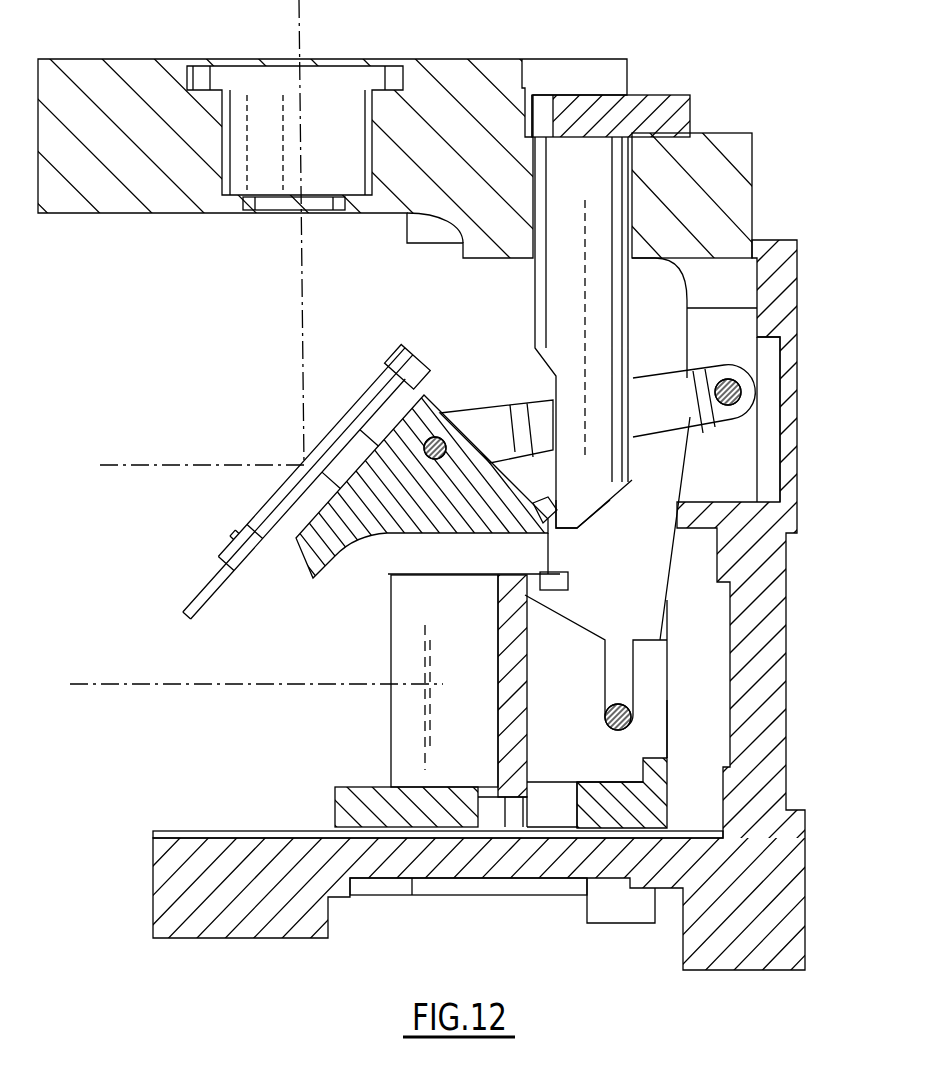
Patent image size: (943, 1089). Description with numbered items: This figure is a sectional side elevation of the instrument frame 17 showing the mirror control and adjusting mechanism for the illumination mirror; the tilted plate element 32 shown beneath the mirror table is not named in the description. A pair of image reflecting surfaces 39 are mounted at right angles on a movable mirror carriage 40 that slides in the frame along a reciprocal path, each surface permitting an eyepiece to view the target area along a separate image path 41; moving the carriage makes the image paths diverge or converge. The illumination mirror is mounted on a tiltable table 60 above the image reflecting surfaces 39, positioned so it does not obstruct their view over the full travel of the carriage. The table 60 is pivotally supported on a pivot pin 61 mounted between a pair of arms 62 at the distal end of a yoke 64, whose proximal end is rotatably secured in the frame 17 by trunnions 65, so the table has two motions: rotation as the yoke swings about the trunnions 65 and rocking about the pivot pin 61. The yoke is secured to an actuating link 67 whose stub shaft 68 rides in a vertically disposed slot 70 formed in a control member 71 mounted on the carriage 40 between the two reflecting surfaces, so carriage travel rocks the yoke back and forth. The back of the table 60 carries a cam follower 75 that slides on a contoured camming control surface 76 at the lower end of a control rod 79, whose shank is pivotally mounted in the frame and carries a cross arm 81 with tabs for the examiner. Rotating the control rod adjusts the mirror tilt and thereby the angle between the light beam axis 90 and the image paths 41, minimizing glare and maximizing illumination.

The frame 17 is at (797, 657).
The plate 32 is at (262, 505).
The image reflecting surface 39 is at (405, 726).
The mirror carriage 40 is at (335, 808).
The image path 41 is at (155, 686).
The tiltable table 60 is at (308, 565).
The pivot pin 61 is at (443, 440).
The arms 62 is at (497, 437).
The yoke 64 is at (666, 373).
The trunnions 65 is at (735, 392).
The actuating link 67 is at (677, 478).
The stub shaft 68 is at (617, 737).
The slot 70 is at (633, 672).
The control member 71 is at (657, 732).
The cam follower 75 is at (553, 517).
The camming control surface 76 is at (568, 474).
The control rod 79 is at (635, 213).
The cross arm 81 is at (662, 103).
The light beam axis 90 is at (200, 465).